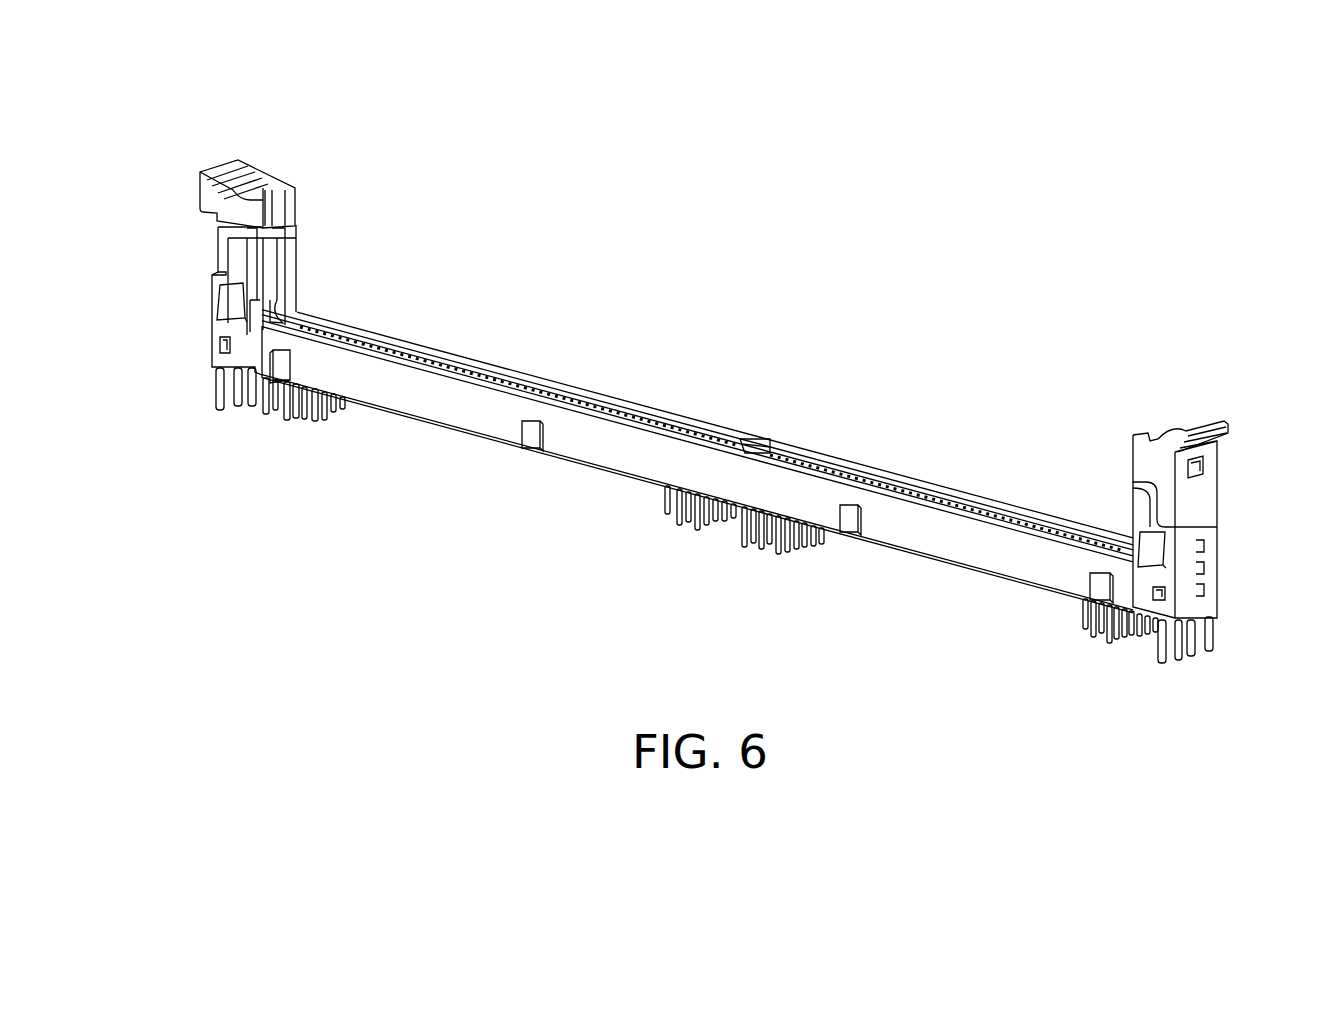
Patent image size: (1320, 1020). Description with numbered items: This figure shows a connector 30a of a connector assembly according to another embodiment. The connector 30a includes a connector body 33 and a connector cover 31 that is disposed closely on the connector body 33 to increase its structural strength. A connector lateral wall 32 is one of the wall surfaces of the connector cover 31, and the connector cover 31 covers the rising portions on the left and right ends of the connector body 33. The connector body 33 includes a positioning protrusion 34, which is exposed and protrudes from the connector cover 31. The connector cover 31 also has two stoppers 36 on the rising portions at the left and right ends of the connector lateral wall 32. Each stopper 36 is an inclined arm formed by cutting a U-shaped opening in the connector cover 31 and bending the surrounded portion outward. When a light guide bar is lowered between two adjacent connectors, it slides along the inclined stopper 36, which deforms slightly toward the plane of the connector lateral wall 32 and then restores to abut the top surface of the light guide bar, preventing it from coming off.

The connector 30a is at (209, 140).
The connector cover 31 is at (1208, 538).
The connector lateral wall 32 is at (445, 407).
The connector body 33 is at (1198, 495).
The positioning protrusion 34 is at (532, 448).
The stopper 36 is at (223, 298).